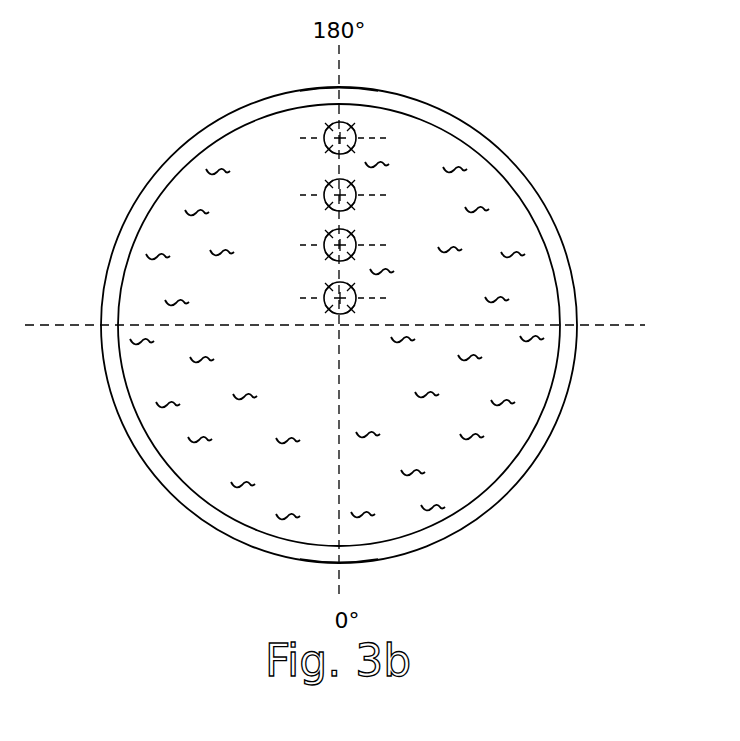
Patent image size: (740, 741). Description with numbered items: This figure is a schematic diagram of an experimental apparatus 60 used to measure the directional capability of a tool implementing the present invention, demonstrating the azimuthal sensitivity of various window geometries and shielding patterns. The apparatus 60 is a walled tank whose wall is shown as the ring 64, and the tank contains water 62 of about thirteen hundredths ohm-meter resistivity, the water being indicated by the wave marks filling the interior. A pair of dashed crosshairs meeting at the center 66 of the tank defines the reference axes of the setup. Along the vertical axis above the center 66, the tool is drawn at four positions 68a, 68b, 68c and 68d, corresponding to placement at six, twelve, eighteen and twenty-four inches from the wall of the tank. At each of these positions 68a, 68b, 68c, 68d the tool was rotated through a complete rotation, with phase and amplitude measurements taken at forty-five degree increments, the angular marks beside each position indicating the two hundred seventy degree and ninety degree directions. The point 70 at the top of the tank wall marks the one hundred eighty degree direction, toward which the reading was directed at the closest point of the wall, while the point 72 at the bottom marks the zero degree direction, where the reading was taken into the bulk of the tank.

The medical device / housing 60 is at (554, 477).
The textured surface 62 is at (309, 481).
The outer ring 64 is at (537, 188).
The center axis 66 is at (354, 342).
The nozzle 68a is at (328, 149).
The nozzle 68b is at (328, 206).
The nozzle 68c is at (328, 256).
The nozzle 68d is at (337, 314).
The top reference mark 70 is at (288, 80).
The bottom reference mark 72 is at (288, 571).